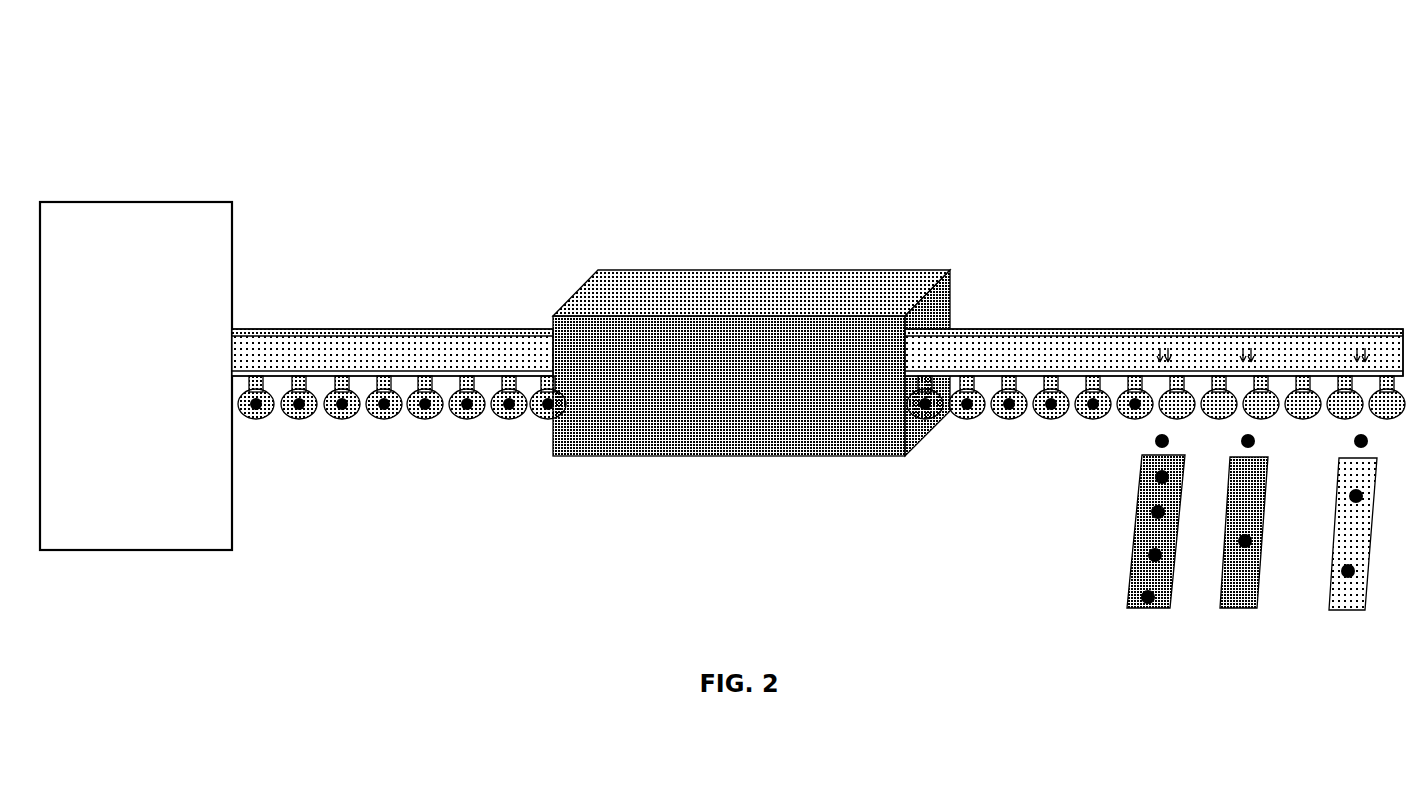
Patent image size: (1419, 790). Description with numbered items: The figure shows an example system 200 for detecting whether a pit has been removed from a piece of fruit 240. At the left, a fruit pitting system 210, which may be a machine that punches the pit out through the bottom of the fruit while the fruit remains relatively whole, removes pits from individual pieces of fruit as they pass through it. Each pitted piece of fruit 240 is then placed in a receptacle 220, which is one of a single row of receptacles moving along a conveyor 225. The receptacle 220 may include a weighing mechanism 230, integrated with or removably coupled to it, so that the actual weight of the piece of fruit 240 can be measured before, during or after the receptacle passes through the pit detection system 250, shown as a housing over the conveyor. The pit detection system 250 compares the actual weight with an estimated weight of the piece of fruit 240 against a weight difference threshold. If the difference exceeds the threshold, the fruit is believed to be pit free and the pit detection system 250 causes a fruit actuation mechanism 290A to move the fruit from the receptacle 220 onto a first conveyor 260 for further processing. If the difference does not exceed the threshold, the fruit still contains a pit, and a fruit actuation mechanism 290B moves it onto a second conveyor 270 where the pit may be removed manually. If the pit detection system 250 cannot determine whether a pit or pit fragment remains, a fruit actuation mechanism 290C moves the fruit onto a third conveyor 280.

The system 200 is at (78, 96).
The fruit pitting system 210 is at (133, 202).
The receptacle 220 is at (297, 422).
The conveyor 225 is at (392, 329).
The weighing mechanism 230 is at (343, 422).
The piece of fruit 240 is at (391, 420).
The pit detection system 250 is at (706, 268).
The first conveyor 260 is at (1135, 610).
The second conveyor 270 is at (1233, 610).
The third conveyor 280 is at (1345, 612).
The fruit actuation mechanism 290A is at (1163, 348).
The fruit actuation mechanism 290B is at (1247, 348).
The fruit actuation mechanism 290C is at (1361, 348).